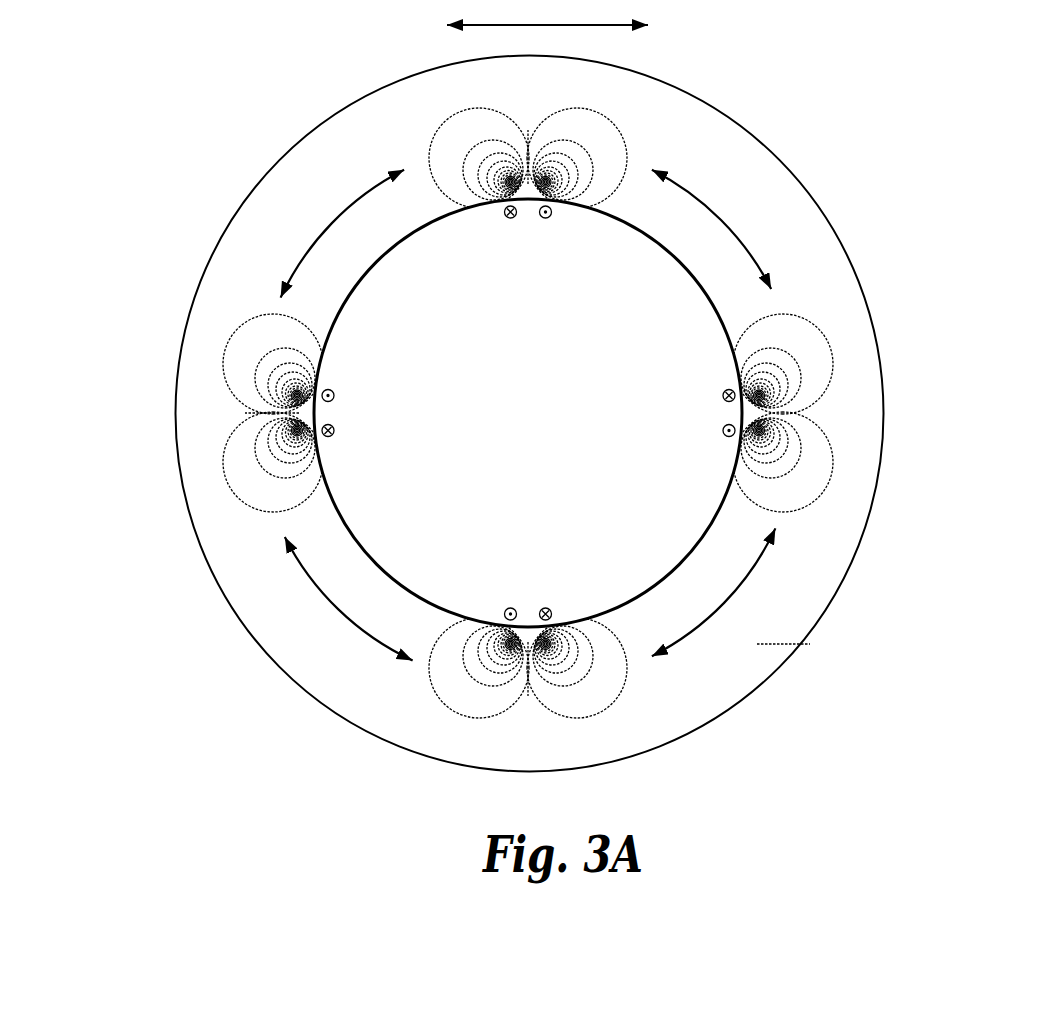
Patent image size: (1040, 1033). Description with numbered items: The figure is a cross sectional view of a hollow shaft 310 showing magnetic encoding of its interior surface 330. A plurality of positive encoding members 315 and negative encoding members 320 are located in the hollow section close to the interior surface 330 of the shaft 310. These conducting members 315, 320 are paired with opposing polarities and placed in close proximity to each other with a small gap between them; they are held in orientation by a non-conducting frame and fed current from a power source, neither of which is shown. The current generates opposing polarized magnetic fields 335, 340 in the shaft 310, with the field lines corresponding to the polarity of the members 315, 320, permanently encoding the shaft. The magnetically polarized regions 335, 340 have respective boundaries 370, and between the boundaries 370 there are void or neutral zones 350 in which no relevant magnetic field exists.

The shaft 310 is at (860, 136).
The positive encoding member 315 is at (723, 397).
The negative encoding member 320 is at (722, 433).
The interior surface 330 is at (375, 258).
The polarized magnetic field 335 is at (812, 318).
The polarized magnetic field 340 is at (808, 508).
The neutral zone 350 is at (335, 608).
The boundary 370 is at (547, 14).